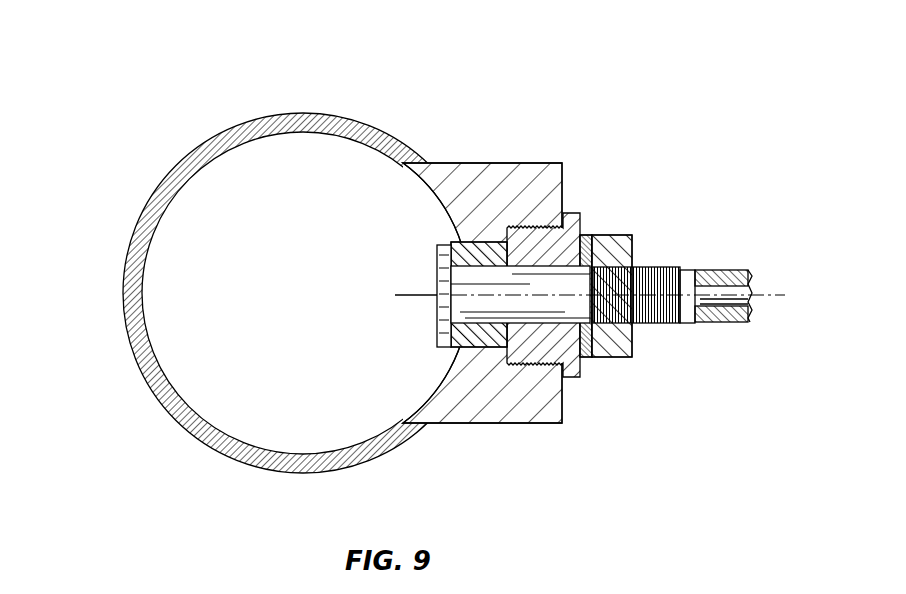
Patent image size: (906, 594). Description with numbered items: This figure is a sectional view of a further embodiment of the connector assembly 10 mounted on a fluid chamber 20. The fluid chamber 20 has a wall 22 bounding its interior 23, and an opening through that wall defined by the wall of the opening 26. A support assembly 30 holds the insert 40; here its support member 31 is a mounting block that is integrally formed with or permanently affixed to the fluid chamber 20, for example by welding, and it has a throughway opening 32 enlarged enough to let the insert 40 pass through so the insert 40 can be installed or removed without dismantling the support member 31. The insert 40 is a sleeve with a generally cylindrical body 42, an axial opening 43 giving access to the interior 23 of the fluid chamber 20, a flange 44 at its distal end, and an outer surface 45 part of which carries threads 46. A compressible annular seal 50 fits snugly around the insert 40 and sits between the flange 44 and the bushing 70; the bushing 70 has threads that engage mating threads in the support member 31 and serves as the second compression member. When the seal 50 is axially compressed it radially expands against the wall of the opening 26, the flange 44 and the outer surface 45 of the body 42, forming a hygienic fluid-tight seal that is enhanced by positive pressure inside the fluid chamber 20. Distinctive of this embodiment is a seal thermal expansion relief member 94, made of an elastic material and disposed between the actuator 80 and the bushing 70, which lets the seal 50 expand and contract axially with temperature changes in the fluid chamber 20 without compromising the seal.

The connector assembly 10 is at (424, 268).
The fluid chamber 20 is at (256, 294).
The wall 22 is at (155, 200).
The interior 23 is at (203, 292).
The wall of the opening 26 is at (477, 347).
The support assembly 30 is at (521, 268).
The support member 31 is at (563, 185).
The throughway opening 32 is at (495, 240).
The insert 40 is at (695, 307).
The body 42 is at (662, 324).
The axial opening 43 is at (723, 289).
The flange 44 is at (437, 263).
The outer surface 45 is at (512, 328).
The threads 46 is at (638, 325).
The seal 50 is at (455, 240).
The bushing 70 is at (580, 214).
The actuator 80 is at (617, 235).
The seal thermal expansion relief member 94 is at (587, 358).